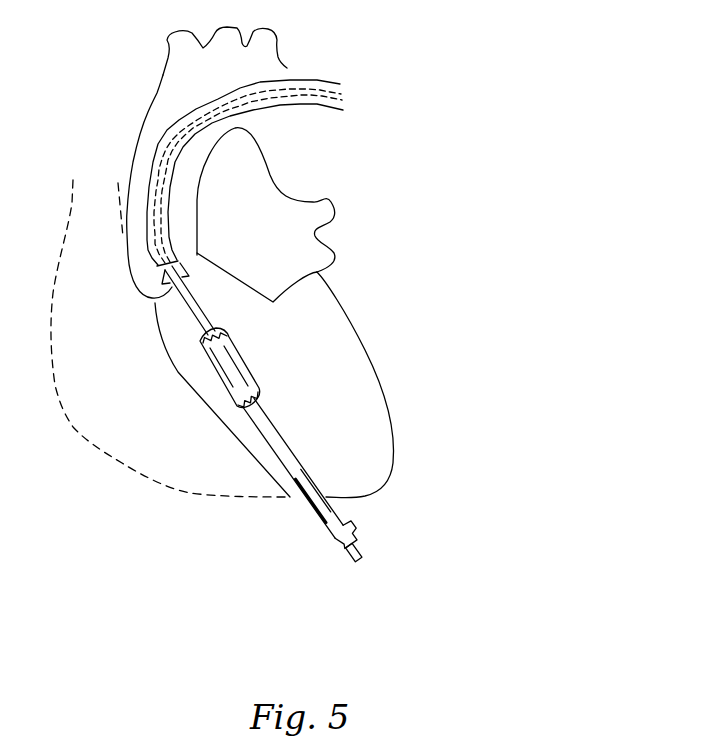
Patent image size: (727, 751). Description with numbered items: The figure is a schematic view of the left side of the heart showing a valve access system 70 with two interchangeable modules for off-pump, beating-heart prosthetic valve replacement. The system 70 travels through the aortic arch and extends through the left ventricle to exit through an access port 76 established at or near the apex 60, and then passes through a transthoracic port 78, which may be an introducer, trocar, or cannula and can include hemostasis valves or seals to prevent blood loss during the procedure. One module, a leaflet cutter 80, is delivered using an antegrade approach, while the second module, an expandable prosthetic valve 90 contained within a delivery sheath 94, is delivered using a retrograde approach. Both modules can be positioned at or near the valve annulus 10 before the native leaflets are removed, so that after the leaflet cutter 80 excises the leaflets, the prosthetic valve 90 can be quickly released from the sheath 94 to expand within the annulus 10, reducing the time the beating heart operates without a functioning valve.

The valve annulus 10 is at (204, 248).
The apex 60 is at (405, 473).
The valve access system 70 is at (355, 123).
The access port 76 is at (330, 497).
The transthoracic port 78 is at (340, 546).
The leaflet cutter 80 is at (140, 217).
The expandable prosthetic valve 90 is at (243, 377).
The delivery sheath 94 is at (291, 410).